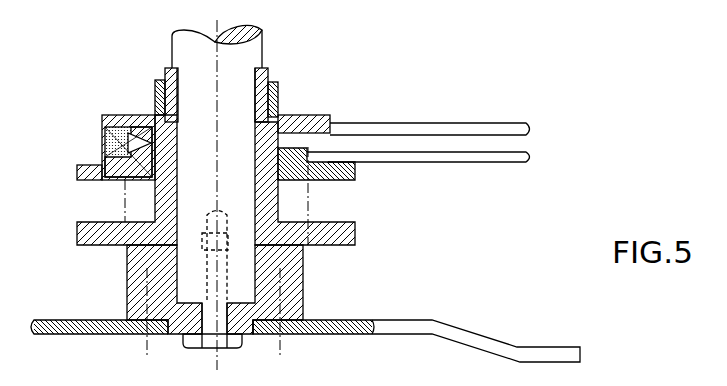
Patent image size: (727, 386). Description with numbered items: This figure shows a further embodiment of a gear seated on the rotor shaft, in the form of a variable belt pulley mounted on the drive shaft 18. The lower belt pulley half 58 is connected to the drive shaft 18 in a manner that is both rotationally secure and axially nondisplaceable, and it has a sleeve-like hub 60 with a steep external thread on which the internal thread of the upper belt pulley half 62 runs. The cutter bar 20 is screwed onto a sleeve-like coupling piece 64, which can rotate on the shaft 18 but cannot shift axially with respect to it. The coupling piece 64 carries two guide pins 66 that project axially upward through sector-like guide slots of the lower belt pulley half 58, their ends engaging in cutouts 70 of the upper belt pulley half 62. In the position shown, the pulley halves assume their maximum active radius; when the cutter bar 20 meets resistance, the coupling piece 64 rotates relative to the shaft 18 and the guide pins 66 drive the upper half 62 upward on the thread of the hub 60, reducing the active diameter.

The drive shaft 18 is at (253, 53).
The cutter bar 20 is at (402, 328).
The lower belt pulley half 58 is at (357, 172).
The sleeve-like hub 60 is at (277, 82).
The upper belt pulley half 62 is at (330, 117).
The coupling piece 64 is at (290, 284).
The guide pins 66 is at (326, 113).
The cutouts 70 is at (157, 112).